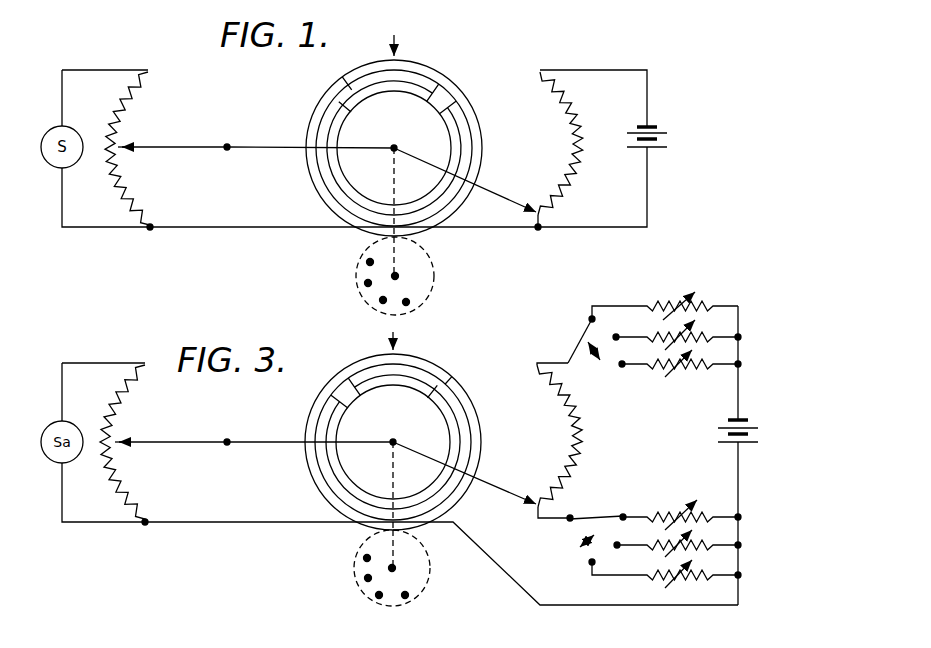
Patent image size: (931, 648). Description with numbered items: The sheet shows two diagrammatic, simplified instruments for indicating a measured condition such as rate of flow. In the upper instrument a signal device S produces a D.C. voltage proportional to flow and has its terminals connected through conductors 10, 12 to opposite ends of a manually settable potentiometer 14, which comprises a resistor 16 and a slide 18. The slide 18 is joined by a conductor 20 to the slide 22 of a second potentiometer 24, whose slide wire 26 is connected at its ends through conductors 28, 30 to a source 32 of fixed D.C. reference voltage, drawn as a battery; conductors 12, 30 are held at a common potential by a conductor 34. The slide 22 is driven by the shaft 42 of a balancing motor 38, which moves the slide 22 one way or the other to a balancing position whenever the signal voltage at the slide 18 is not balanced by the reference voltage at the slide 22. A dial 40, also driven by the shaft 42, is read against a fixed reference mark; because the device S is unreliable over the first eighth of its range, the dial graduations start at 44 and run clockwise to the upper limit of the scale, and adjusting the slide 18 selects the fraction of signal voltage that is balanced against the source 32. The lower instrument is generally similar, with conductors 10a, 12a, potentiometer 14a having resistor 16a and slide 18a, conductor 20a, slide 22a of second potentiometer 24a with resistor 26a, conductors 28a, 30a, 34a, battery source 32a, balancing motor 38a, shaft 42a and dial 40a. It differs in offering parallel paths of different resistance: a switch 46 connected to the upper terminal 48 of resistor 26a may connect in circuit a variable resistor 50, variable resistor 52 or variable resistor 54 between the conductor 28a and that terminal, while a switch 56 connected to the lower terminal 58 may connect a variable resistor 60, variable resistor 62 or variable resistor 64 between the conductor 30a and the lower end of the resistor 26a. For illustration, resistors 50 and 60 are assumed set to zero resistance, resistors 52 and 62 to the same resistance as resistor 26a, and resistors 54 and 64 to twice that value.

In FIG. 1, the conductor 10 is at (118, 70).
In FIG. 1, the conductor 12 is at (108, 229).
In FIG. 1, the manually settable potentiometer 14 is at (130, 121).
In FIG. 1, the resistor 16 is at (116, 112).
In FIG. 1, the slide 18 is at (176, 149).
In FIG. 1, the conductor 20 is at (266, 147).
In FIG. 1, the slide 22 is at (494, 193).
In FIG. 1, the second potentiometer 24 is at (548, 176).
In FIG. 1, the slide wire 26 is at (576, 119).
In FIG. 1, the conductor 28 is at (595, 70).
In FIG. 1, the conductor 30 is at (585, 229).
In FIG. 1, the source of fixed D.C. reference voltage 32 is at (655, 126).
In FIG. 1, the conductor 34 is at (262, 229).
In FIG. 1, the balancing motor 38 is at (422, 268).
In FIG. 1, the dial 40 is at (427, 70).
In FIG. 1, the shaft 42 is at (393, 186).
In FIG. 1, the start of dial graduations 44 is at (456, 88).
In FIG. 3, the conductor 10a is at (114, 363).
In FIG. 3, the conductor 12a is at (90, 524).
In FIG. 3, the manually settable potentiometer 14a is at (137, 415).
In FIG. 3, the resistor 16a is at (112, 415).
In FIG. 3, the slide 18a is at (165, 446).
In FIG. 3, the conductor 20a is at (270, 442).
In FIG. 3, the slide 22a is at (522, 479).
In FIG. 3, the second potentiometer 24a is at (578, 484).
In FIG. 3, the resistor 26a is at (582, 432).
In FIG. 3, the conductor 28a is at (740, 399).
In FIG. 3, the conductor 30a is at (738, 483).
In FIG. 3, the source of fixed D.C. reference voltage 32a is at (725, 434).
In FIG. 3, the conductor 34a is at (228, 524).
In FIG. 3, the balancing motor 38a is at (424, 582).
In FIG. 3, the dial 40a is at (442, 368).
In FIG. 3, the shaft 42a is at (392, 478).
In FIG. 3, the switch 46 is at (583, 338).
In FIG. 3, the terminal 48 is at (562, 360).
In FIG. 3, the variable resistor 50 is at (680, 374).
In FIG. 3, the variable resistor 52 is at (655, 335).
In FIG. 3, the variable resistor 54 is at (652, 306).
In FIG. 3, the switch 56 is at (596, 518).
In FIG. 3, the terminal 58 is at (568, 520).
In FIG. 3, the variable resistor 60 is at (660, 517).
In FIG. 3, the variable resistor 62 is at (716, 546).
In FIG. 3, the variable resistor 64 is at (660, 577).